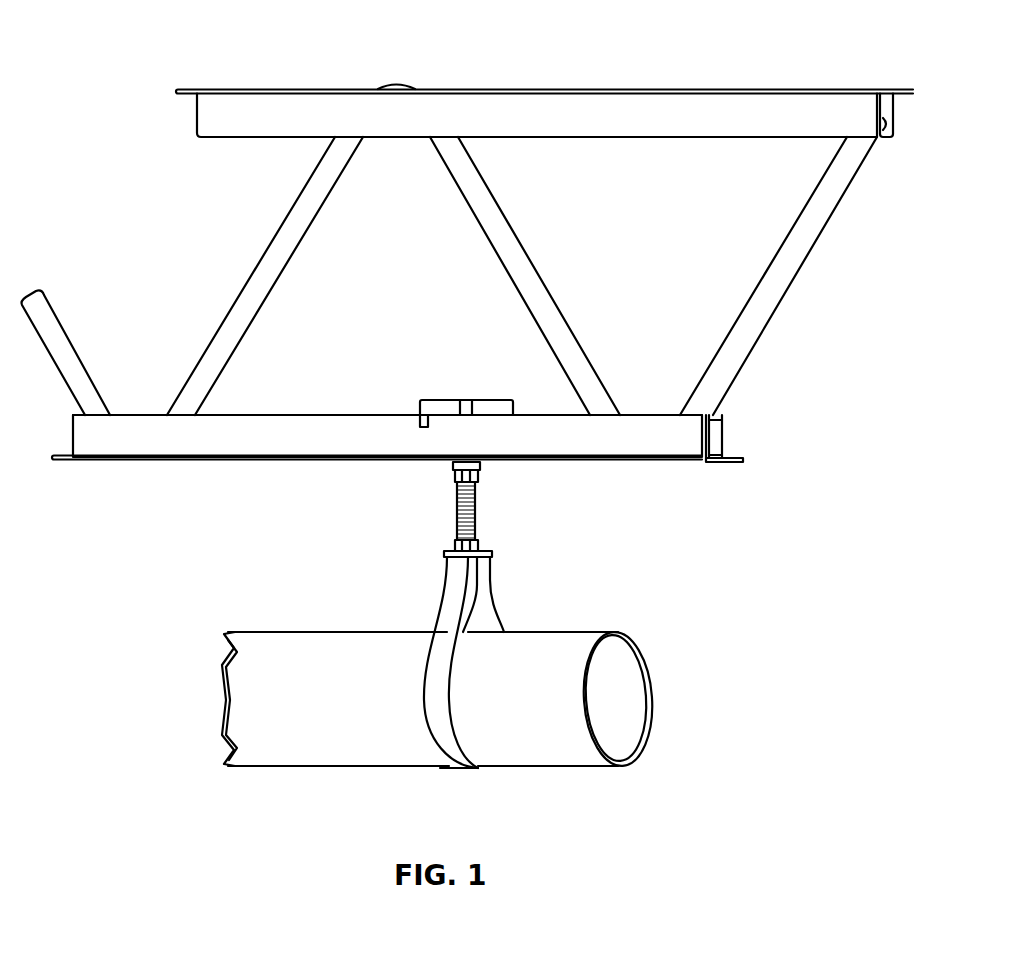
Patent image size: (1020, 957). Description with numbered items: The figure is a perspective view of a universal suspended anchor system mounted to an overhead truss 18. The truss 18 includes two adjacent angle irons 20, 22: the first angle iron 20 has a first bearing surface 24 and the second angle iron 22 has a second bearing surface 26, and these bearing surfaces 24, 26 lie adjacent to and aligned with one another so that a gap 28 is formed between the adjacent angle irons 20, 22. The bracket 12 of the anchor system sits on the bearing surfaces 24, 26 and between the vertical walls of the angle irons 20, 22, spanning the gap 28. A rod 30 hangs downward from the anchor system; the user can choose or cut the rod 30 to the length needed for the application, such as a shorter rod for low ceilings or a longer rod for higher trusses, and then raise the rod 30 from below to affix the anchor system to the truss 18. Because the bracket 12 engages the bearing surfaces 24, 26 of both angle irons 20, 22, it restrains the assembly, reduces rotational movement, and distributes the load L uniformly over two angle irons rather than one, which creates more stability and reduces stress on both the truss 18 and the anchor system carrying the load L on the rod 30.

The bracket 12 is at (491, 399).
The truss 18 is at (254, 425).
The first angle iron 20 is at (640, 443).
The second angle iron 22 is at (724, 426).
The first bearing surface 24 is at (327, 413).
The second bearing surface 26 is at (712, 410).
The gap 28 is at (711, 437).
The rod 30 is at (456, 511).
The load L is at (541, 640).